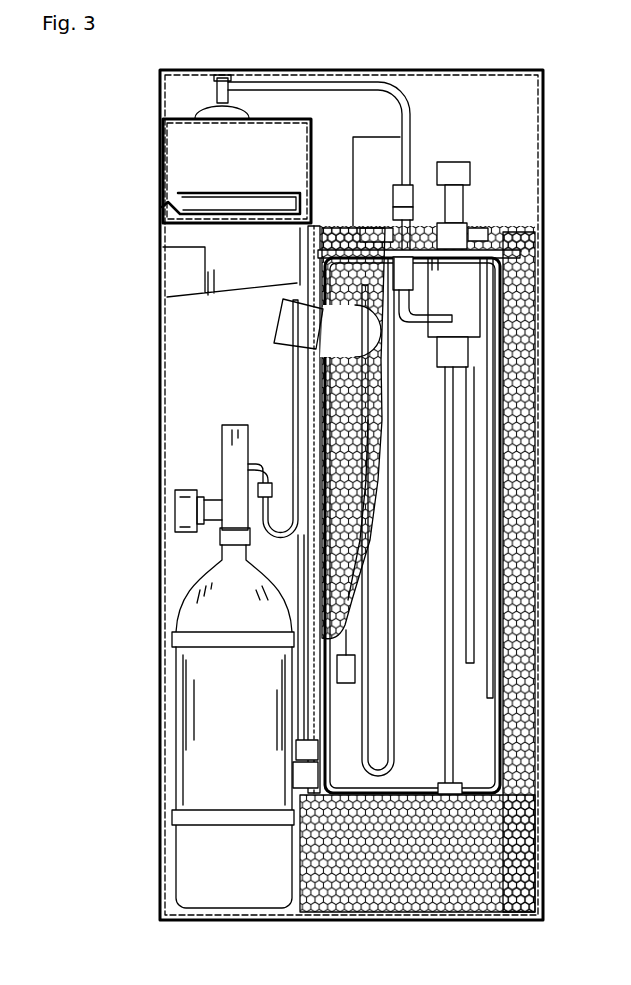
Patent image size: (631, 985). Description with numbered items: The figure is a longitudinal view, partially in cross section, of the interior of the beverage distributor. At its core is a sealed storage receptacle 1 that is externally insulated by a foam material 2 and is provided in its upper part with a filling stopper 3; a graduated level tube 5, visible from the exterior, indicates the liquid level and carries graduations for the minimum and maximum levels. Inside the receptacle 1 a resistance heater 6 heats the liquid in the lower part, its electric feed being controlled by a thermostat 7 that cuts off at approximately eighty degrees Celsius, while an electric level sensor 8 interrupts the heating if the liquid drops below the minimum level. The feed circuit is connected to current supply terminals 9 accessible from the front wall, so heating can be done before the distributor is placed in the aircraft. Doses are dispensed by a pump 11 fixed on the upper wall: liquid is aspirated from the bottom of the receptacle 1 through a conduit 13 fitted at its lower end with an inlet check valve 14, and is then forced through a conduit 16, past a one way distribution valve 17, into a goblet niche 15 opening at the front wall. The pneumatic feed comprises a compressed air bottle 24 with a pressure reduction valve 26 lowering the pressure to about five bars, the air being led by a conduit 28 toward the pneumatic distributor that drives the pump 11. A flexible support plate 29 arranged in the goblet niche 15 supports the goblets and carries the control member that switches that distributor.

The sealed storage receptacle 1 is at (492, 740).
The insulating material 2 is at (492, 852).
The filling stopper 3 is at (292, 324).
The graduated level tube 5 is at (505, 482).
The resistance heater 6 is at (380, 745).
The thermostat 7 is at (490, 648).
The electric level sensor 8 is at (345, 684).
The current supply terminals 9 is at (215, 262).
The pump 11 is at (462, 200).
The conduit 13 is at (445, 542).
The inlet check valve 14 is at (447, 780).
The goblet niche 15 is at (165, 160).
The conduit 16 is at (409, 124).
The one way distribution valve 17 is at (410, 272).
The compressed air bottle 24 is at (210, 700).
The pressure reduction valve 26 is at (223, 440).
The conduit 28 is at (312, 384).
The flexible support plate 29 is at (264, 196).